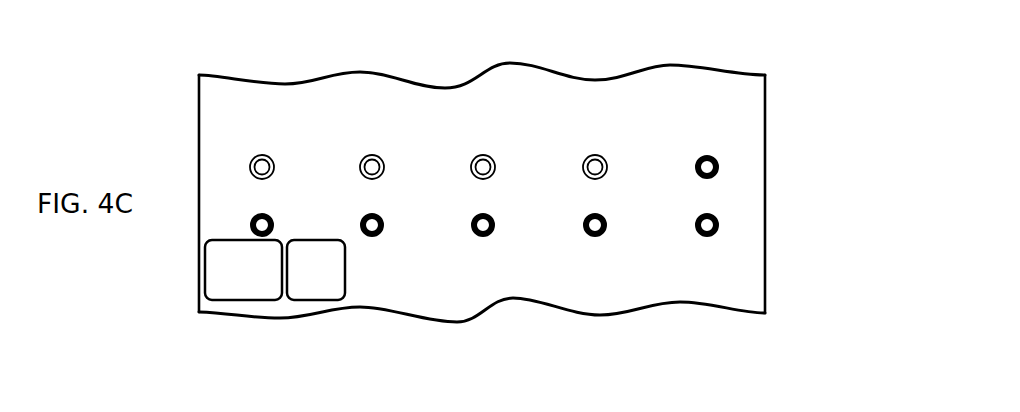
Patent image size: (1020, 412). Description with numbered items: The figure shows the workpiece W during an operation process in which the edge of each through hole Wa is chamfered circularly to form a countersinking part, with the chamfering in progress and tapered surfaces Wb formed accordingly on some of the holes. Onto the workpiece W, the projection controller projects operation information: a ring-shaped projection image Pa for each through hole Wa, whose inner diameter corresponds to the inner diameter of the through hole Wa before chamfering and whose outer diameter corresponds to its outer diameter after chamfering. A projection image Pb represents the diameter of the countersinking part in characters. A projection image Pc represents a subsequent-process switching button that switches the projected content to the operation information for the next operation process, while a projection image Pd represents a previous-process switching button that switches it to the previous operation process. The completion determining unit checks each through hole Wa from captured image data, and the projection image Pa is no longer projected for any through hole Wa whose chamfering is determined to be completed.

The workpiece W is at (767, 126).
The through hole Wa is at (603, 218).
The tapered surface Wb is at (373, 155).
The projection image Pa is at (593, 237).
The projection image Pb is at (557, 88).
The projection image Pc is at (308, 300).
The projection image Pd is at (240, 300).